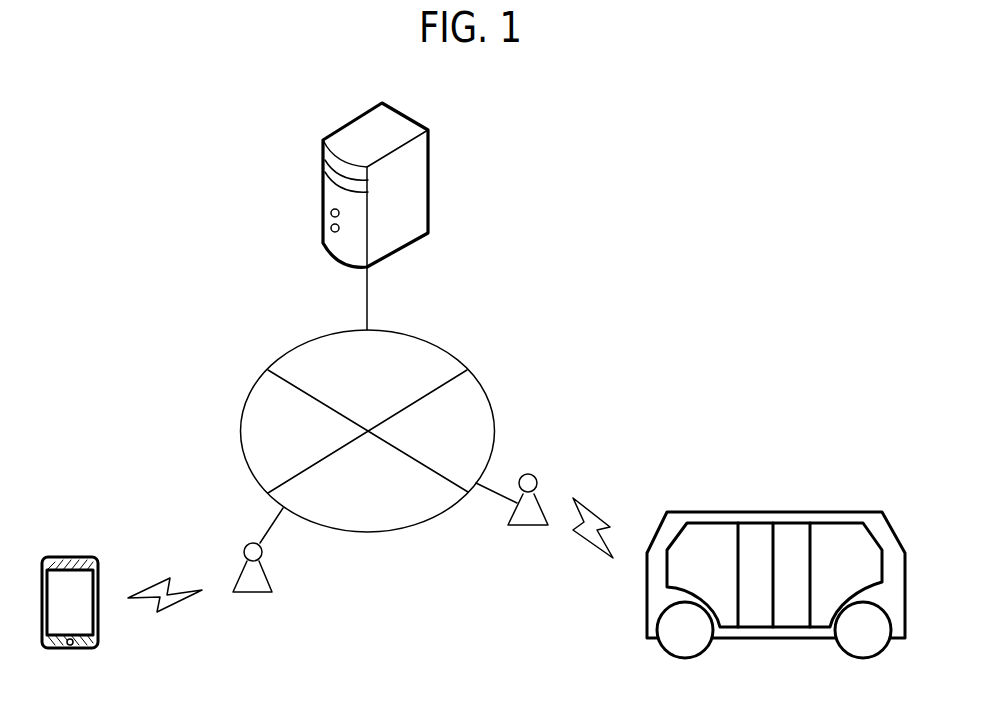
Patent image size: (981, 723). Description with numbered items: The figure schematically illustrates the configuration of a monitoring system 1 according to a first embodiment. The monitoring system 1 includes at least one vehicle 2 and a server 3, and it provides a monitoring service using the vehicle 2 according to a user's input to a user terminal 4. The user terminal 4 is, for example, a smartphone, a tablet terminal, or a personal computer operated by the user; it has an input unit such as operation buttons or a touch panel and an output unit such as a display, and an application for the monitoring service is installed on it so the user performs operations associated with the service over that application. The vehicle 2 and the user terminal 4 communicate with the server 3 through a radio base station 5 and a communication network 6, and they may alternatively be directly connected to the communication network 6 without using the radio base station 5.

The monitoring system 1 is at (693, 230).
The vehicle 2 is at (848, 512).
The server 3 is at (432, 175).
The user terminal 4 is at (77, 557).
The radio base station 5 is at (263, 568).
The communication network 6 is at (440, 513).